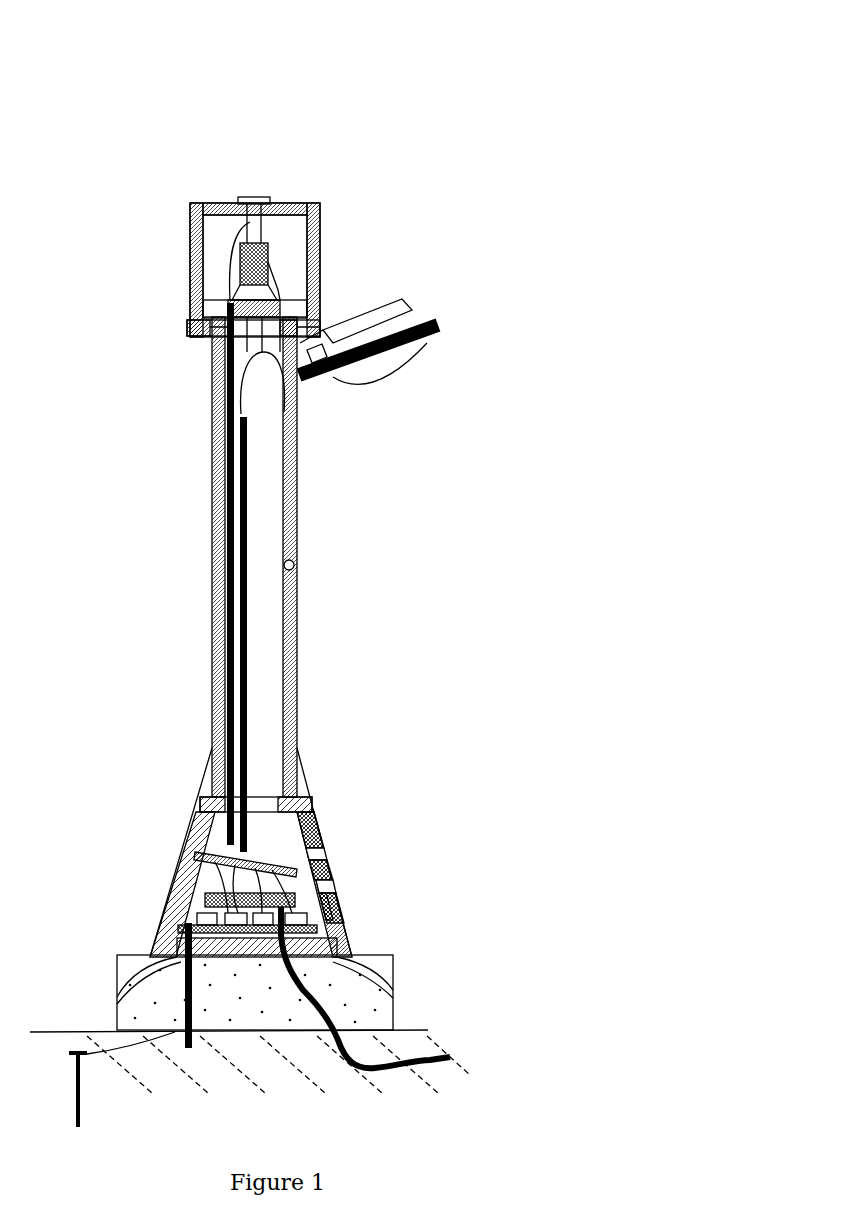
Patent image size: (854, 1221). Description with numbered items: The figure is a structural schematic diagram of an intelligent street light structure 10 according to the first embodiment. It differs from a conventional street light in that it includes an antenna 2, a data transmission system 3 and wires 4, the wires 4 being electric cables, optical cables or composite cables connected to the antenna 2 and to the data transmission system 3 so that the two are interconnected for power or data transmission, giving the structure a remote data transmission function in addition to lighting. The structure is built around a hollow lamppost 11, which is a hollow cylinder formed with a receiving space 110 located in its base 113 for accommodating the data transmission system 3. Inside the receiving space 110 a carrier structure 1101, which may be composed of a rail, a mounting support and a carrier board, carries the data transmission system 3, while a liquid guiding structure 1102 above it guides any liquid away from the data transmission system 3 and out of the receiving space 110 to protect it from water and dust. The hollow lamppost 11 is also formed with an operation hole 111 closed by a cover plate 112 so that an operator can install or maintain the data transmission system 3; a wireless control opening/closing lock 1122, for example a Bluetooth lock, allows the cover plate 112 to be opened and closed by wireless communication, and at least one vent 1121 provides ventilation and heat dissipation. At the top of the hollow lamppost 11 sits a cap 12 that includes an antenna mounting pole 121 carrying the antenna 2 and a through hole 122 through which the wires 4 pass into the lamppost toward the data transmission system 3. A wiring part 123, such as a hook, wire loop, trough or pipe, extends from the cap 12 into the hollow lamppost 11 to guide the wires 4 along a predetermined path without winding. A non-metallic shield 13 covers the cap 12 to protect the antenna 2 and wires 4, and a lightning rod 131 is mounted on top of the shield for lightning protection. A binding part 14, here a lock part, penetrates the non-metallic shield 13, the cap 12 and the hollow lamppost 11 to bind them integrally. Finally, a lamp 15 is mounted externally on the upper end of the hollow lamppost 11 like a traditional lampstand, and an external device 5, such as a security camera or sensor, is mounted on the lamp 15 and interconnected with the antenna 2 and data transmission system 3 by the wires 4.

The intelligent street light structure 10 is at (347, 165).
The hollow lamppost 11 is at (282, 474).
The cap 12 is at (200, 302).
The non-metallic shield 13 is at (322, 210).
The binding part 14 is at (188, 335).
The lamp 15 is at (440, 339).
The antenna 2 is at (277, 260).
The data transmission system 3 is at (341, 880).
The wires 4 is at (224, 499).
The external device 5 is at (418, 304).
The receiving space 110 is at (200, 882).
The operation hole 111 is at (325, 840).
The cover plate 112 is at (348, 906).
The base 113 is at (270, 838).
The antenna mounting pole 121 is at (247, 218).
The through hole 122 is at (272, 303).
The wiring part 123 is at (233, 361).
The lightning rod 131 is at (258, 190).
The carrier structure 1101 is at (170, 922).
The liquid guiding structure 1102 is at (194, 844).
The vent 1121 is at (303, 563).
The wireless control opening/closing lock 1122 is at (333, 852).